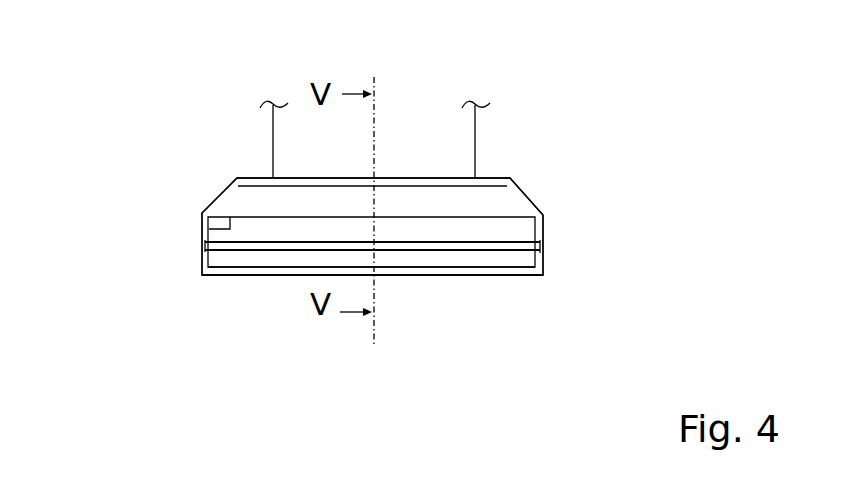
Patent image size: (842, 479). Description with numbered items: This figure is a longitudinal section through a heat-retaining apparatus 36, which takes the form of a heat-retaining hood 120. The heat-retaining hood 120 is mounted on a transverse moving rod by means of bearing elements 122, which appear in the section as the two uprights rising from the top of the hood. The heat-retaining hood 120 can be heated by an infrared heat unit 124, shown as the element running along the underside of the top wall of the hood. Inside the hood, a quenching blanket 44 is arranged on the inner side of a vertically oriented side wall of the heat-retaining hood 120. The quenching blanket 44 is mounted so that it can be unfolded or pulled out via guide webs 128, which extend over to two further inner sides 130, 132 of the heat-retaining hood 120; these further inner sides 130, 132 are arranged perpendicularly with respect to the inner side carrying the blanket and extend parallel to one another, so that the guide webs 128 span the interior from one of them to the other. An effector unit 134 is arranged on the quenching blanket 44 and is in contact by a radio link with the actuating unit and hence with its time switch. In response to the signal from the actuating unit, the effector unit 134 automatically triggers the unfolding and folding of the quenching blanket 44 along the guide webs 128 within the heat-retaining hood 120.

The heat-retaining apparatus 36 is at (202, 166).
The heat-retaining hood 120 is at (202, 213).
The bearing elements 122 is at (475, 138).
The infrared heat unit 124 is at (415, 186).
The quenching blanket 44 is at (508, 230).
The effector unit 134 is at (207, 221).
The guide webs 128 is at (542, 251).
The further inner side 132 is at (203, 270).
The further inner side 130 is at (542, 264).